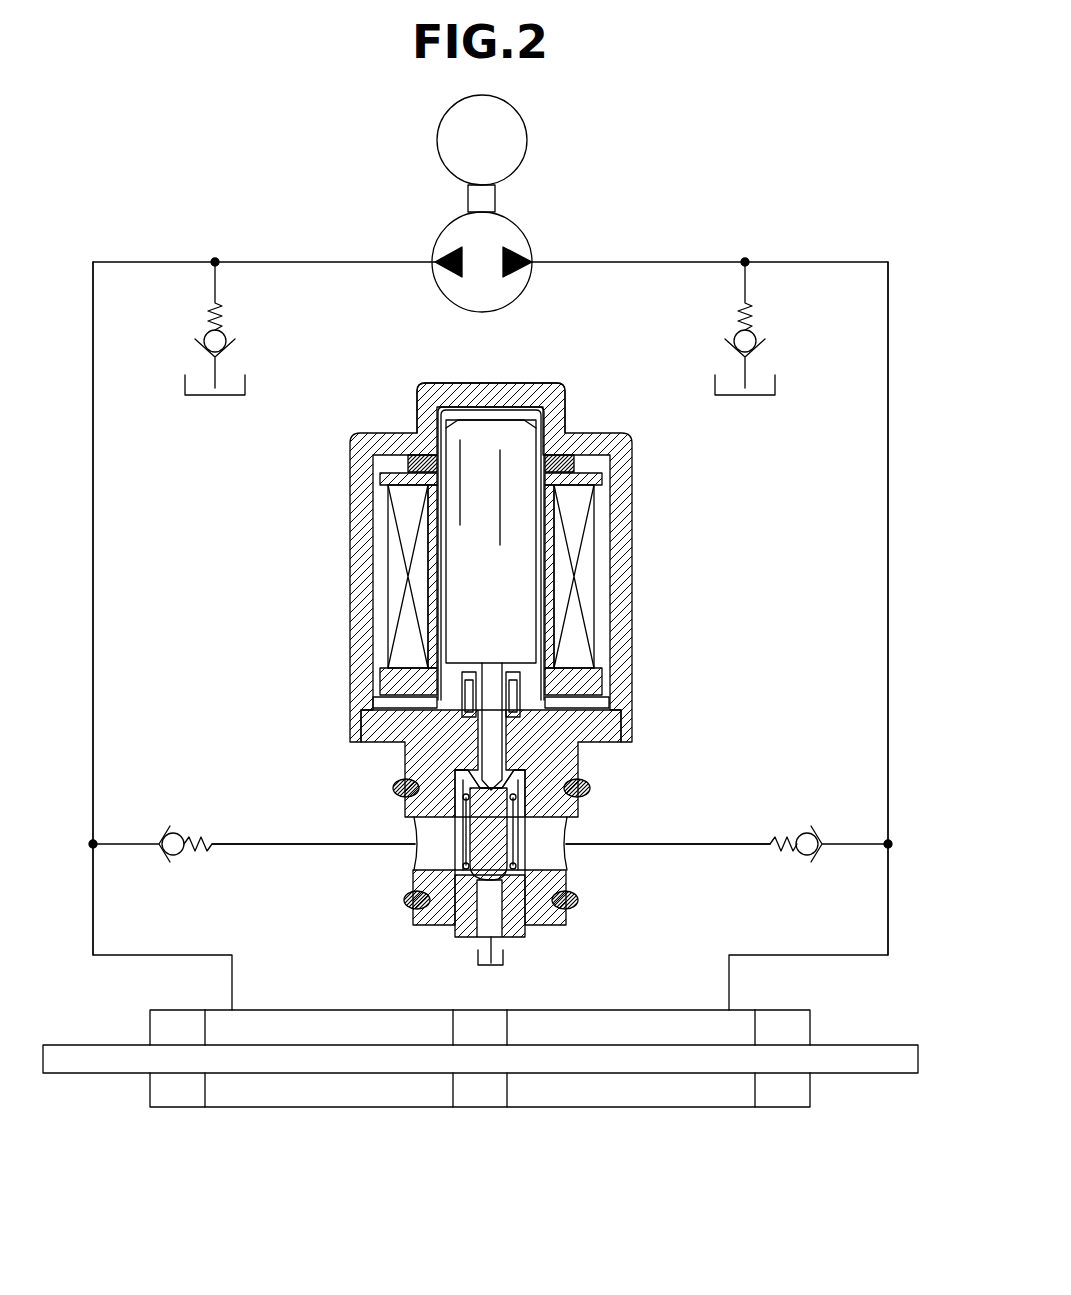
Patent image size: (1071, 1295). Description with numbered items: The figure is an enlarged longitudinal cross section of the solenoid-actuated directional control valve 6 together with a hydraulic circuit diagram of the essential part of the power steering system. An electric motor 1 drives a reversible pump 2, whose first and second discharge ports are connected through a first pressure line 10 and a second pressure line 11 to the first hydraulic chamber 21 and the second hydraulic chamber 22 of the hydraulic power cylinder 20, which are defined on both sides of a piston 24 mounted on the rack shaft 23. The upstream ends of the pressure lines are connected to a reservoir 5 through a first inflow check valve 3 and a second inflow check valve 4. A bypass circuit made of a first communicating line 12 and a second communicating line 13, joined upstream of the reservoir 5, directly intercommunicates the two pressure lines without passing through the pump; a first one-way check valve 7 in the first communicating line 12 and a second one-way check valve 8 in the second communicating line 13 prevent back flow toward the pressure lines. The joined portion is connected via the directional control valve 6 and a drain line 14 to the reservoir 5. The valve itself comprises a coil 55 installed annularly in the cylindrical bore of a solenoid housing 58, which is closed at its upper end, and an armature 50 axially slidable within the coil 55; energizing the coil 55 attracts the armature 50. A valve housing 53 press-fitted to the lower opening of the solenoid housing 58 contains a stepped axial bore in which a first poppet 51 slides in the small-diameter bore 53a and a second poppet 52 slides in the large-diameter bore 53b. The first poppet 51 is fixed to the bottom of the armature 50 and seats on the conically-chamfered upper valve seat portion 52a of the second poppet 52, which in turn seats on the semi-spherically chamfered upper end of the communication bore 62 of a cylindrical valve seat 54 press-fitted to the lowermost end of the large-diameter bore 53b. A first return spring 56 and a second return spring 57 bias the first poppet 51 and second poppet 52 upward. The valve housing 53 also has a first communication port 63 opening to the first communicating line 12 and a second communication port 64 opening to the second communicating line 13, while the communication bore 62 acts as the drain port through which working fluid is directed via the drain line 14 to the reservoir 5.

The electric motor 1 is at (437, 140).
The reversible pump 2 is at (515, 297).
The first inflow check valve 3 is at (756, 338).
The second inflow check valve 4 is at (226, 338).
The reservoir 5 is at (225, 395).
The directional control valve 6 is at (642, 467).
The first one-way check valve 7 is at (804, 824).
The second one-way check valve 8 is at (178, 824).
The first pressure line 10 is at (888, 500).
The second pressure line 11 is at (93, 540).
The first communicating line 12 is at (713, 842).
The second communicating line 13 is at (248, 842).
The drain line 14 is at (482, 950).
The hydraulic power cylinder 20 is at (733, 1107).
The first hydraulic chamber 21 is at (668, 1093).
The second hydraulic chamber 22 is at (328, 1093).
The rack shaft 23 is at (893, 1045).
The piston 24 is at (485, 1093).
The armature 50 is at (512, 557).
The first poppet 51 is at (492, 688).
The second poppet 52 is at (505, 813).
The upper valve seat portion 52a is at (530, 768).
The valve housing 53 is at (607, 727).
The small-diameter bore 53a is at (478, 738).
The large-diameter bore 53b is at (447, 882).
The valve seat 54 is at (520, 918).
The coil 55 is at (578, 508).
The first return spring 56 is at (526, 692).
The second return spring 57 is at (522, 838).
The solenoid housing 58 is at (588, 440).
The communication bore 62 is at (440, 918).
The first communication port 63 is at (548, 856).
The second communication port 64 is at (430, 855).